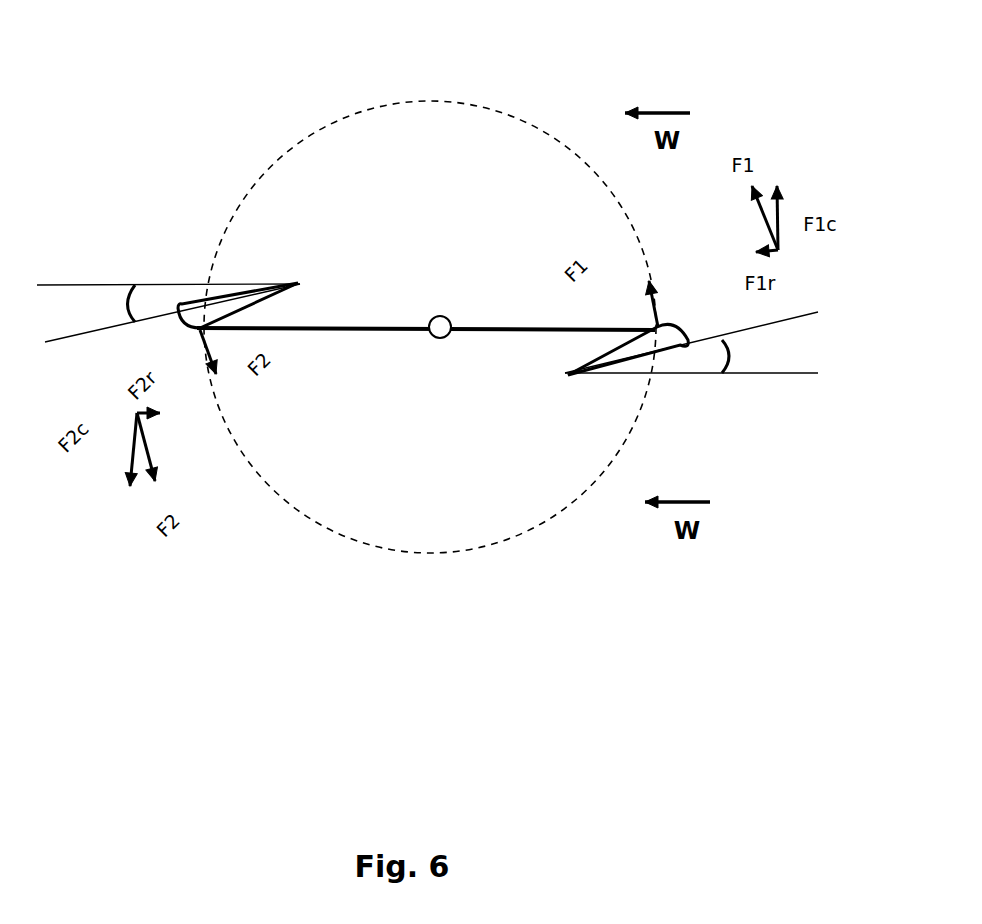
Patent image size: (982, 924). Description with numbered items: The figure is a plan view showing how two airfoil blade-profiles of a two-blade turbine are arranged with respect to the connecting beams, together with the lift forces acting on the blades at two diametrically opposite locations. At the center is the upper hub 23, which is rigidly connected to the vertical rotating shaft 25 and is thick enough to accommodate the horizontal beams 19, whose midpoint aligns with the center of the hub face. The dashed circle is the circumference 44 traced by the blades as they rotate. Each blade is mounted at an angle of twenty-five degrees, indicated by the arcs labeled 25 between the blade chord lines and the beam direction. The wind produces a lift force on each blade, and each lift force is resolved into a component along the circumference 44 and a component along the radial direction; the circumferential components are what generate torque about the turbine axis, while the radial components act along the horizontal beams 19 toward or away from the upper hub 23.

The circumference 44 is at (384, 97).
The horizontal beam 19 is at (510, 327).
The upper hub 23 is at (428, 311).
The vertical rotating shaft 25 is at (427, 328).